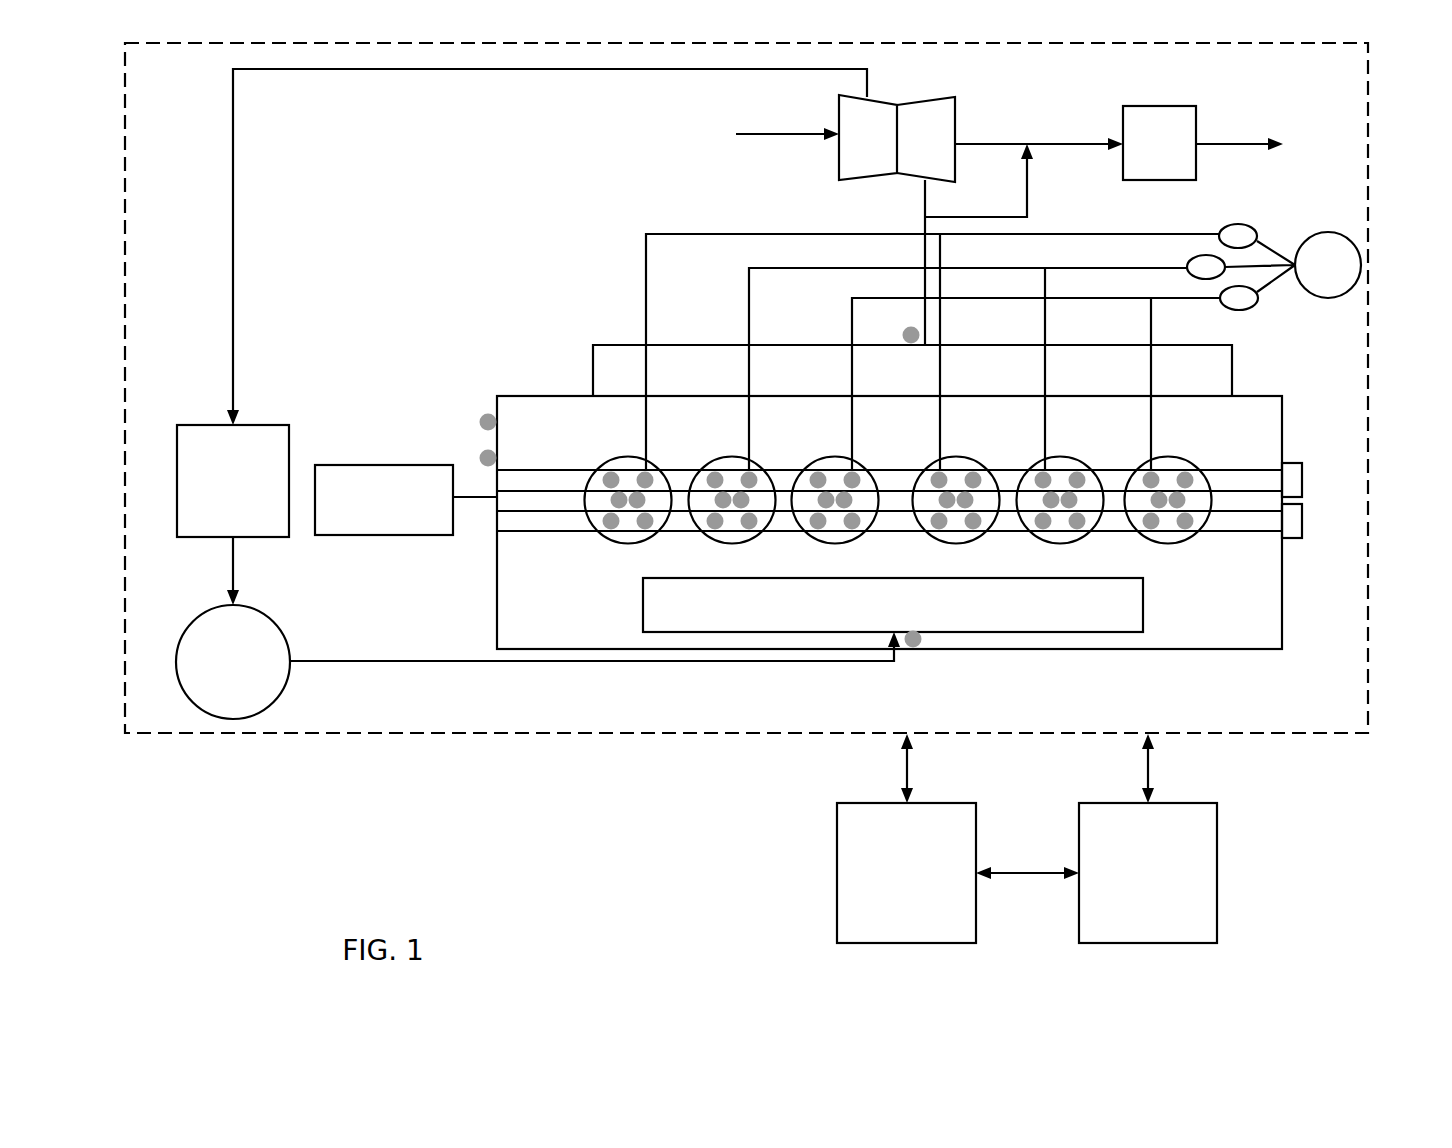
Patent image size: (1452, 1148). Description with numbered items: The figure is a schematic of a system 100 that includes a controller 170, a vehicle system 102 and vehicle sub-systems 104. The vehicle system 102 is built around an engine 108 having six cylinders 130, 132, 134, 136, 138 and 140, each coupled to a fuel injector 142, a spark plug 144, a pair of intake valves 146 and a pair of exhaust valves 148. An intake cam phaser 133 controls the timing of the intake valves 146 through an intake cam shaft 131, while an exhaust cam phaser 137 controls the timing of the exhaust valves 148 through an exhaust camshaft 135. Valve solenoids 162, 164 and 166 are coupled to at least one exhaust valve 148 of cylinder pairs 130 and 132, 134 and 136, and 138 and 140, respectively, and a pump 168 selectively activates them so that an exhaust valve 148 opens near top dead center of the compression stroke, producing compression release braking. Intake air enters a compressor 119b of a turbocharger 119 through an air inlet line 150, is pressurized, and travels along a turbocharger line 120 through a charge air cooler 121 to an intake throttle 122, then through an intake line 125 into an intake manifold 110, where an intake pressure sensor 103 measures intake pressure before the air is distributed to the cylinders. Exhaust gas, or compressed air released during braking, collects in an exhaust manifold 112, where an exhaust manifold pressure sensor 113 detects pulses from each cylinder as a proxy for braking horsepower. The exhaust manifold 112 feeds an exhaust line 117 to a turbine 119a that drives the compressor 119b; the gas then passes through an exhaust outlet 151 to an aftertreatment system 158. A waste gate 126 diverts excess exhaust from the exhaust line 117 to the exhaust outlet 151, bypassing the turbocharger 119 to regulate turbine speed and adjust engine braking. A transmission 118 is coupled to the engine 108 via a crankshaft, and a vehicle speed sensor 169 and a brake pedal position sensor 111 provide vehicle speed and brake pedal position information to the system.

The system 100 is at (1388, 142).
The vehicle system 102 is at (1307, 736).
The intake pressure sensor 103 is at (917, 648).
The vehicle sub-systems 104 is at (976, 825).
The engine 108 is at (497, 580).
The intake manifold 110 is at (1143, 605).
The brake pedal position sensor 111 is at (482, 455).
The exhaust manifold 112 is at (593, 369).
The exhaust manifold pressure sensor 113 is at (920, 334).
The exhaust line 117 is at (925, 200).
The transmission 118 is at (360, 465).
The turbocharger 119 is at (882, 119).
The turbine 119a is at (955, 116).
The compressor 119b is at (839, 101).
The turbocharger line 120 is at (508, 70).
The charge air cooler 121 is at (289, 428).
The intake throttle 122 is at (278, 612).
The intake line 125 is at (607, 662).
The waste gate 126 is at (1028, 200).
The cylinder 130 is at (616, 507).
The intake cam shaft 131 is at (1255, 531).
The cylinder 132 is at (742, 541).
The intake cam phaser 133 is at (1296, 538).
The cylinder 134 is at (845, 541).
The exhaust camshaft 135 is at (1245, 470).
The cylinder 136 is at (965, 541).
The exhaust cam phaser 137 is at (1296, 463).
The cylinder 138 is at (1069, 541).
The cylinder 140 is at (1177, 541).
The fuel injector 142 is at (643, 507).
The spark plug 144 is at (609, 501).
The intake valves 146 is at (603, 525).
The exhaust valves 148 is at (602, 475).
The air inlet line 150 is at (770, 134).
The exhaust outlet 151 is at (1044, 144).
The aftertreatment system 158 is at (1204, 143).
The valve solenoid 162 is at (1228, 230).
The valve solenoid 164 is at (1190, 264).
The valve solenoid 166 is at (1246, 308).
The pump 168 is at (1326, 238).
The vehicle speed sensor 169 is at (482, 416).
The controller 170 is at (1217, 862).